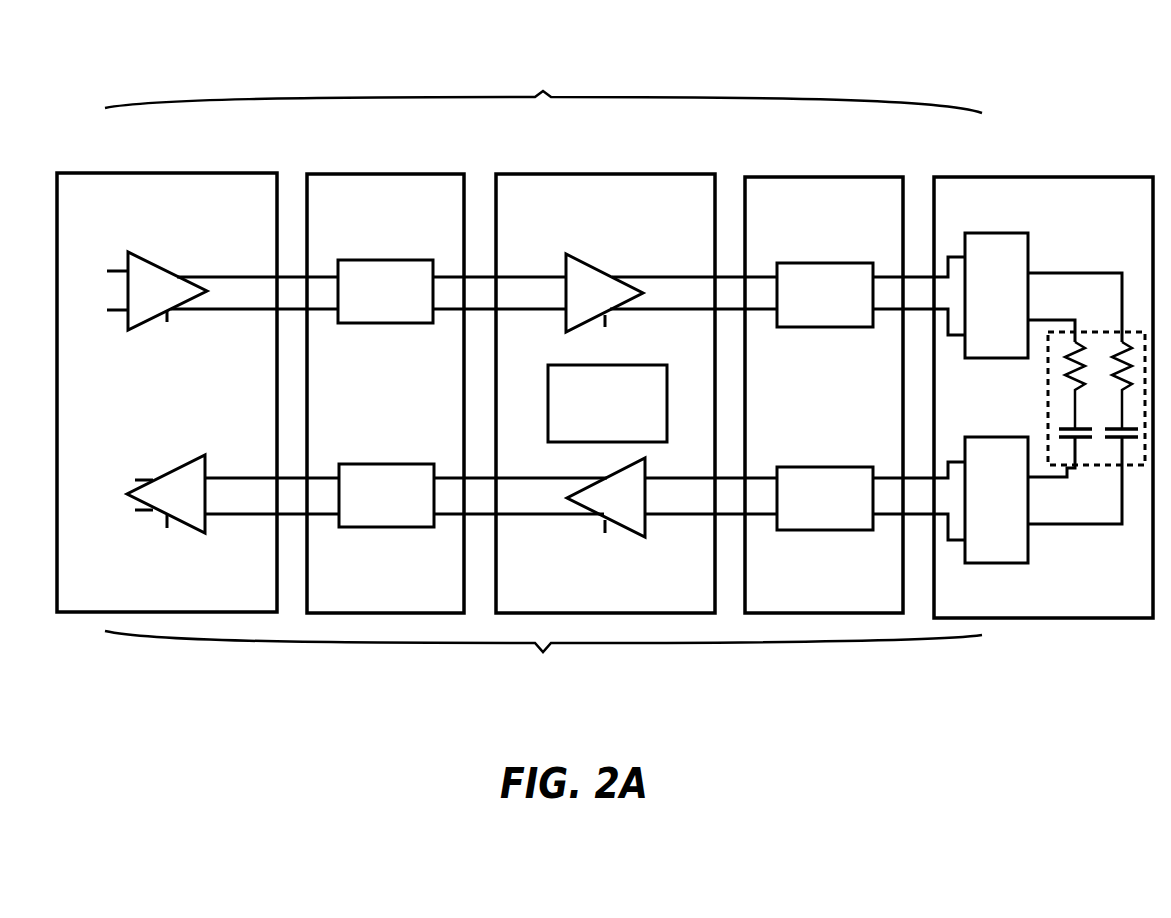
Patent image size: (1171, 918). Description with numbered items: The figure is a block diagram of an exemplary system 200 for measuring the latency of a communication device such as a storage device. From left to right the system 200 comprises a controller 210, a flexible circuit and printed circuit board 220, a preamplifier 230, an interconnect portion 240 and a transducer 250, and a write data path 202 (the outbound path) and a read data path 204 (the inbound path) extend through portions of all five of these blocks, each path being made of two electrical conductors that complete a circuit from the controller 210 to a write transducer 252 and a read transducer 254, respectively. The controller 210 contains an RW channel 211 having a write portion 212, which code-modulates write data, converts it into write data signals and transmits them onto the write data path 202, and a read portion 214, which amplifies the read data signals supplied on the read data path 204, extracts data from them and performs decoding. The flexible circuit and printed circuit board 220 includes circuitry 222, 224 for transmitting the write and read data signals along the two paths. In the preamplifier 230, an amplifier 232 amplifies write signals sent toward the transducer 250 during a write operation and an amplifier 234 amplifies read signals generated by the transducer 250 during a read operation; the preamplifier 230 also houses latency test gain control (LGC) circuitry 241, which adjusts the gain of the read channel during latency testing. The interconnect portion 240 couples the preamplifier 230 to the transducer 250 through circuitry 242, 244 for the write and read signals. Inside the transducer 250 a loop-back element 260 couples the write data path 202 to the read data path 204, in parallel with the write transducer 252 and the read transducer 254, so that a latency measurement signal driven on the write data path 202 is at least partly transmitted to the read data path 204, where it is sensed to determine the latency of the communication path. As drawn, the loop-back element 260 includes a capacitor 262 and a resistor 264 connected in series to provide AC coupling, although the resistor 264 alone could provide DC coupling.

The system 200 is at (124, 66).
The write data path 202 is at (543, 90).
The read data path 204 is at (543, 659).
The controller 210 is at (87, 173).
The RW channel 211 is at (212, 228).
The write portion 212 is at (157, 291).
The read portion 214 is at (166, 494).
The flexible circuit and printed circuit board 220 is at (330, 174).
The circuitry 222 is at (385, 291).
The circuitry 224 is at (386, 495).
The preamplifier 230 is at (518, 174).
The amplifier 232 is at (604, 293).
The amplifier 234 is at (606, 497).
The latency test gain control (LGC) circuitry 241 is at (607, 365).
The interconnect portion 240 is at (766, 177).
The circuitry 242 is at (825, 295).
The circuitry 244 is at (825, 498).
The transducer 250 is at (958, 177).
The write transducer 252 is at (996, 295).
The read transducer 254 is at (996, 500).
The loop-back element 260 is at (1048, 411).
The capacitor 262 is at (1110, 441).
The resistor 264 is at (1118, 350).